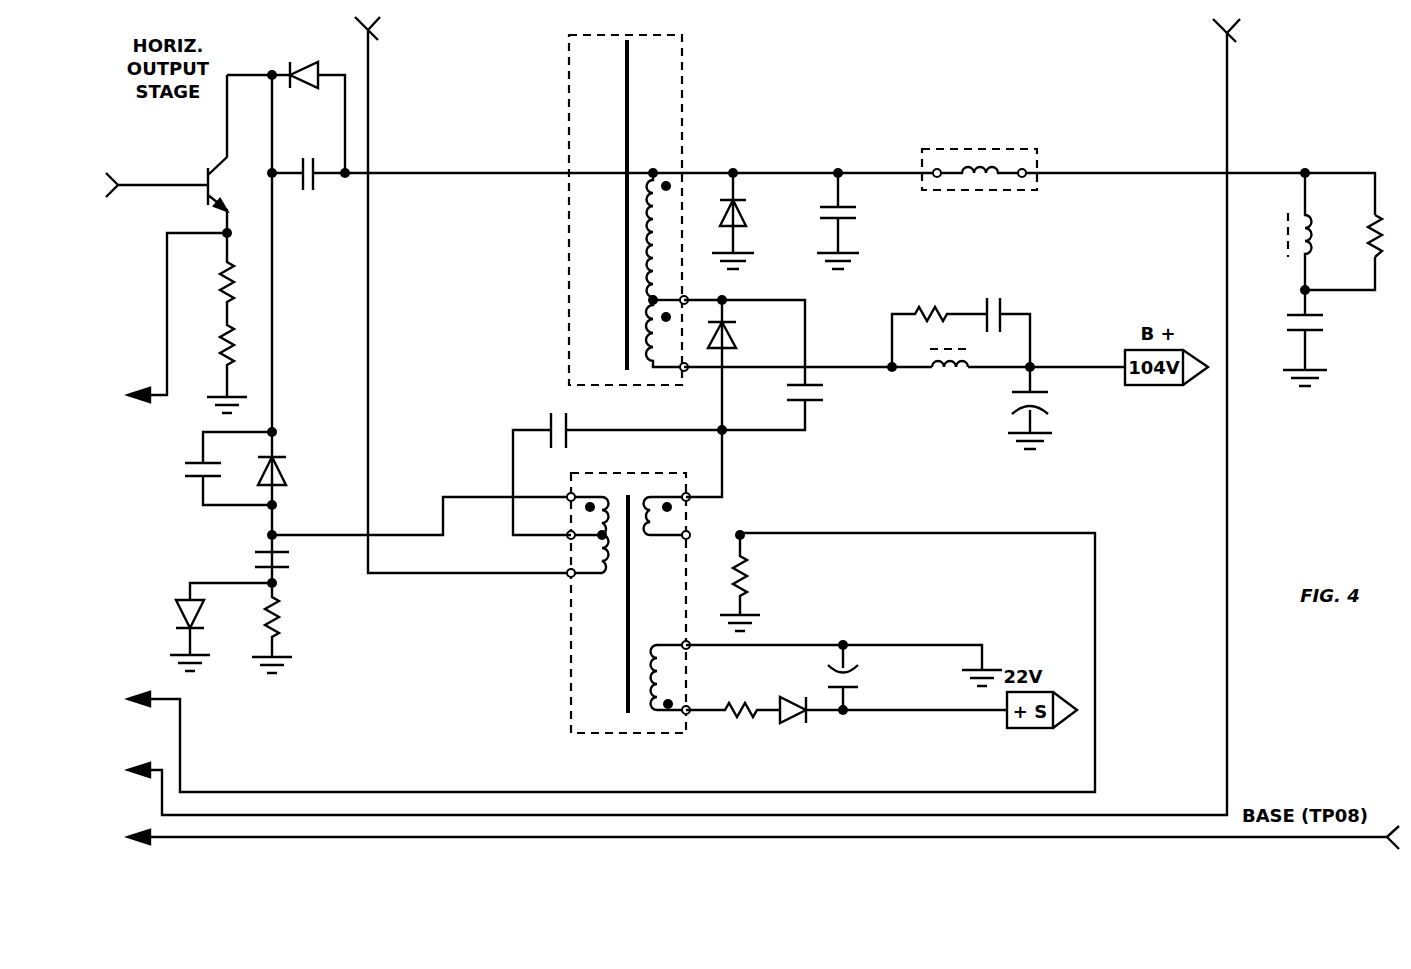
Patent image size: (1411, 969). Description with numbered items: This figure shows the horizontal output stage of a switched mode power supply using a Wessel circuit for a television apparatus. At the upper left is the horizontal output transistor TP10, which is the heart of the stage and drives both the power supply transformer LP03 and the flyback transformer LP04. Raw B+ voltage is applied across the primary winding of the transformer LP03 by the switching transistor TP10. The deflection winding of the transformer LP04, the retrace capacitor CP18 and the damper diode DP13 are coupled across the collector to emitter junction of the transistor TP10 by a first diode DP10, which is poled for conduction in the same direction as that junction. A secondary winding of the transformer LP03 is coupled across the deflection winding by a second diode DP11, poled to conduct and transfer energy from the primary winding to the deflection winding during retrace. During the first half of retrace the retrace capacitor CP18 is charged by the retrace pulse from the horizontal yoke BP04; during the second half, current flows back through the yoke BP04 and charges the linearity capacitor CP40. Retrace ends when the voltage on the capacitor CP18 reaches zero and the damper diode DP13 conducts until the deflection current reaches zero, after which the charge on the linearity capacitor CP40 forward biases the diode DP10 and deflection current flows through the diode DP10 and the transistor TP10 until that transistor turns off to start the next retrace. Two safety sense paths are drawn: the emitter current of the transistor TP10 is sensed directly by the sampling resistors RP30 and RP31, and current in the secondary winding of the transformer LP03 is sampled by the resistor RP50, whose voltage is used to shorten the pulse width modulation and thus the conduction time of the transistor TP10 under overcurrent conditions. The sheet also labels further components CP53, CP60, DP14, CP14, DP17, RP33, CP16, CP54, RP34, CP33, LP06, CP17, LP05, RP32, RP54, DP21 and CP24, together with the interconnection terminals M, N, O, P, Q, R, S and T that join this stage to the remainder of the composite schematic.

The horizontal output transistor TP10 is at (175, 156).
The first diode DP10 is at (306, 108).
The retrace capacitor 560p 2KV CP53 is at (308, 214).
The sampling resistor RP30 is at (202, 276).
The sampling resistor RP31 is at (208, 366).
The capacitor 330P 2KV CP60 is at (204, 468).
The diode BYT78 DP14 is at (306, 468).
The capacitor 680p 1.6KV CP14 is at (384, 540).
The diode BA158 DP17 is at (223, 624).
The resistor 2.7K 5W RP33 is at (300, 628).
The flyback transformer LP04 is at (637, 202).
The power supply transformer LP03 is at (625, 591).
The capacitor 100n 400V CP16 is at (609, 446).
The second diode DP11 is at (746, 396).
The capacitor 330p 2KV CP54 is at (781, 370).
The damper diode DP13 is at (765, 218).
The retrace capacitor CP18 is at (866, 218).
The horizontal yoke BP04 is at (984, 170).
The resistor 33 RP34 is at (937, 315).
The capacitor 6.8n CP33 is at (999, 309).
The inductor 50uH LP06 is at (950, 384).
The electrolytic capacitor 100u 160V CP17 is at (1058, 408).
The linearity coil LP05 is at (1273, 231).
The resistor 1K RP32 is at (1348, 233).
The linearity capacitor CP40 is at (1282, 335).
The resistor RP50 is at (765, 580).
The resistor 0.22 RP54 is at (733, 740).
The diode BA157 DP21 is at (890, 738).
The electrolytic capacitor 220u 35V CP24 is at (886, 677).
The terminal M (base drive) M is at (115, 192).
The terminal N is at (152, 390).
The terminal O is at (137, 688).
The terminal P is at (145, 760).
The terminal Q is at (145, 828).
The terminal R is at (463, 295).
The terminal S is at (1222, 36).
The terminal T (base TP08) T is at (1388, 815).